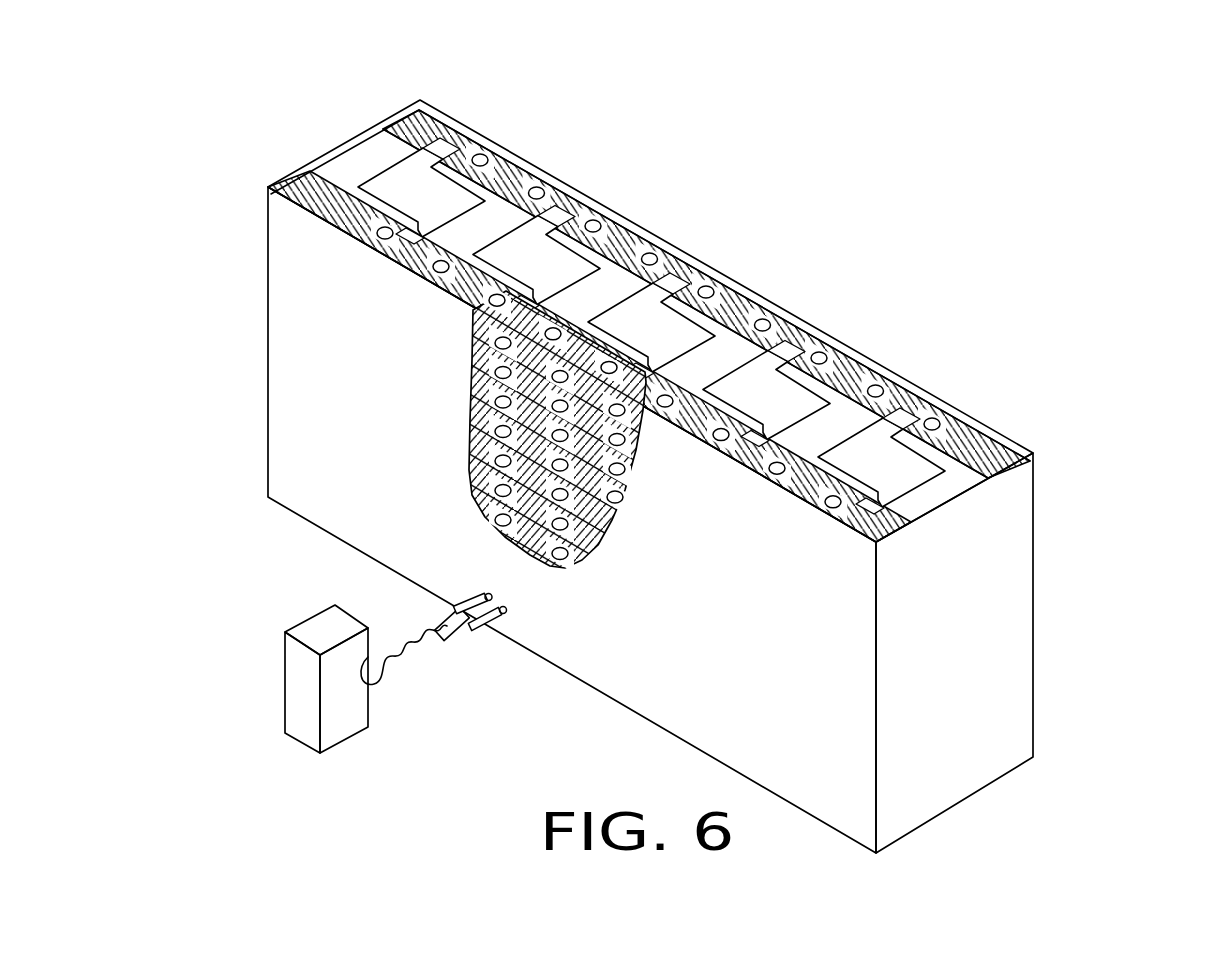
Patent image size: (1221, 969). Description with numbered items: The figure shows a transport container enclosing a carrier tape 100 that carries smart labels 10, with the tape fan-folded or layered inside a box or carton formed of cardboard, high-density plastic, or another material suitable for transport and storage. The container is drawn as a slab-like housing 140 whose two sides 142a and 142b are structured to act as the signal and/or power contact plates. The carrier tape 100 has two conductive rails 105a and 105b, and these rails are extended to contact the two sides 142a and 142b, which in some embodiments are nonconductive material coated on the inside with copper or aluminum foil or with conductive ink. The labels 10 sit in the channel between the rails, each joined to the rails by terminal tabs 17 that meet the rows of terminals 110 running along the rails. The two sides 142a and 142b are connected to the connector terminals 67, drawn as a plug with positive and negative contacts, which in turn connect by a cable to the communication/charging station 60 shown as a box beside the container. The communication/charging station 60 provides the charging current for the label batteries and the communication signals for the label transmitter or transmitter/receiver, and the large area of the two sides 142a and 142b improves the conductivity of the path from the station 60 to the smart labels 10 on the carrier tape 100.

The smart label 10 is at (403, 201).
The electrical terminal tab 17 is at (446, 148).
The communication/charging station 60 is at (300, 697).
The connector terminal 67 is at (467, 606).
The carrier tape 100 is at (348, 160).
The conductive rail 105a is at (475, 343).
The conductive rail 105b is at (641, 242).
The cell terminal 110 is at (482, 158).
The battery housing 140 is at (1146, 566).
The side of container 142a is at (988, 653).
The side of container 142b is at (747, 300).